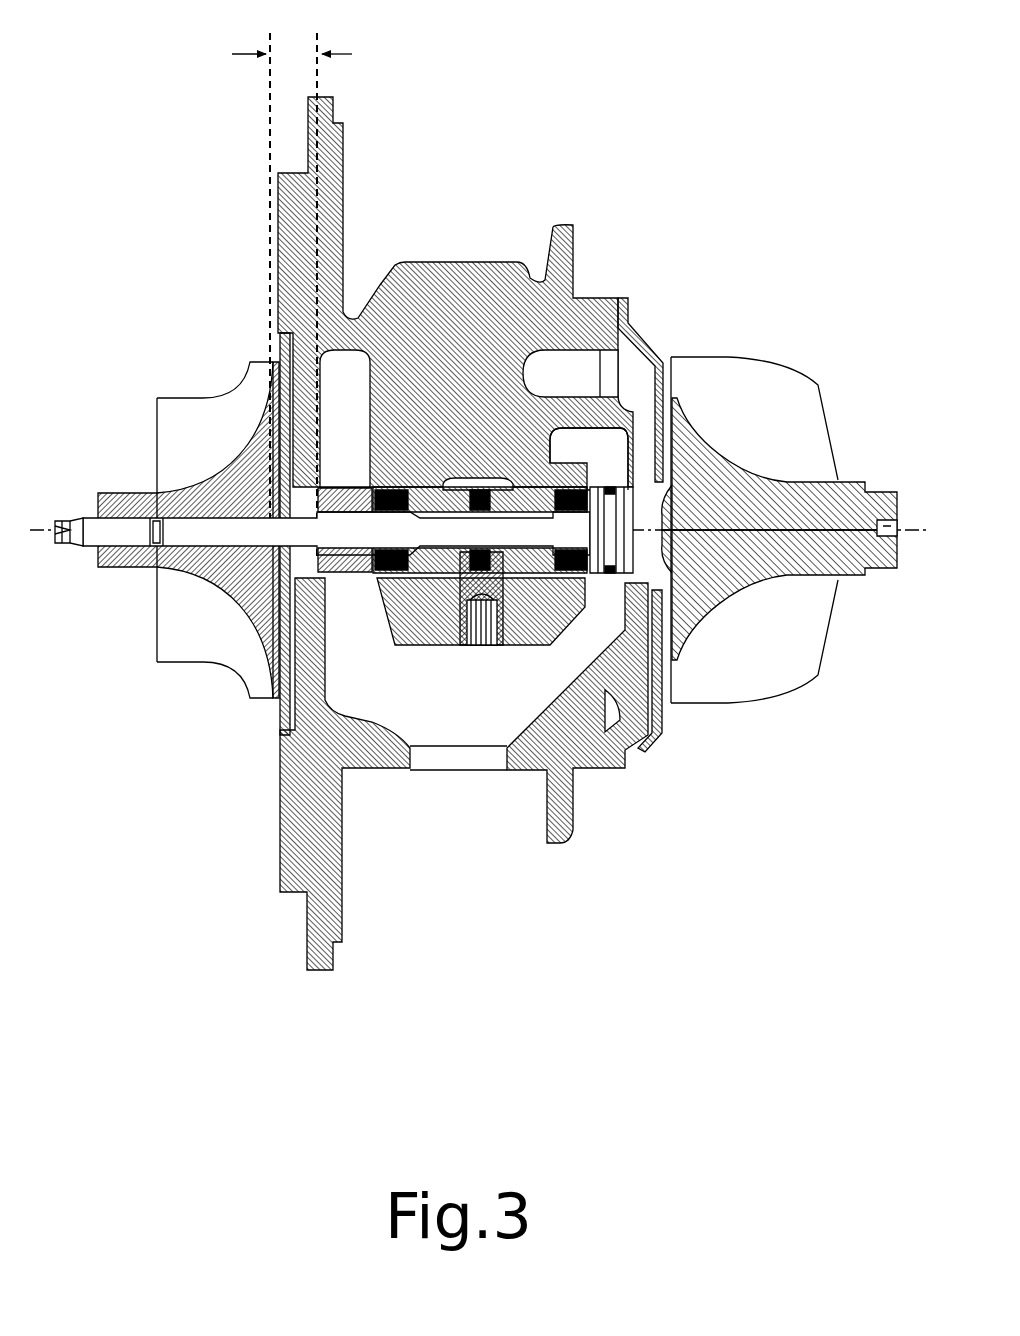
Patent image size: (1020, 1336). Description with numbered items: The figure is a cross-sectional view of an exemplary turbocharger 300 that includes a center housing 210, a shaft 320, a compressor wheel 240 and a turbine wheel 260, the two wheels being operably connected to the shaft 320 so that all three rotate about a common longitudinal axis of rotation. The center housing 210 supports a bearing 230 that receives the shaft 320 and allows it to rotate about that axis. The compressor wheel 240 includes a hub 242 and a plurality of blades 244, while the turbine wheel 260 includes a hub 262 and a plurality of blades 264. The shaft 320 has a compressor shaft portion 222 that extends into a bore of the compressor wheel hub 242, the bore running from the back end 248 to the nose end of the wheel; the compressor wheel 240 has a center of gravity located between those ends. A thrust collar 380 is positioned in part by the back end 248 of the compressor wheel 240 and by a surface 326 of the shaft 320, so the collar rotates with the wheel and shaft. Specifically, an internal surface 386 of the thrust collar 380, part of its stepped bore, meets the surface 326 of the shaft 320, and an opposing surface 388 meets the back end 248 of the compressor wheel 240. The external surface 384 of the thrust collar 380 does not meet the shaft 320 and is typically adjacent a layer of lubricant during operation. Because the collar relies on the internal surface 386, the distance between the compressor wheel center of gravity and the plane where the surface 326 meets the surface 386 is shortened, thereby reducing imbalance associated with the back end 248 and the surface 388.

The turbocharger 300 is at (600, 112).
The center housing 210 is at (440, 431).
The compressor shaft portion 222 is at (222, 535).
The bearing 230 is at (528, 490).
The compressor wheel 240 is at (187, 352).
The compressor wheel hub 242 is at (268, 584).
The compressor wheel blades 244 is at (222, 444).
The back end of compressor wheel 248 is at (262, 630).
The turbine wheel 260 is at (790, 343).
The turbine wheel hub 262 is at (758, 574).
The turbine wheel blades 264 is at (775, 436).
The shaft 320 is at (555, 613).
The surface of shaft 326 is at (318, 548).
The thrust collar 380 is at (345, 600).
The external surface of thrust collar 384 is at (365, 598).
The internal surface of thrust collar 386 is at (335, 600).
The opposing surface of thrust collar 388 is at (325, 605).